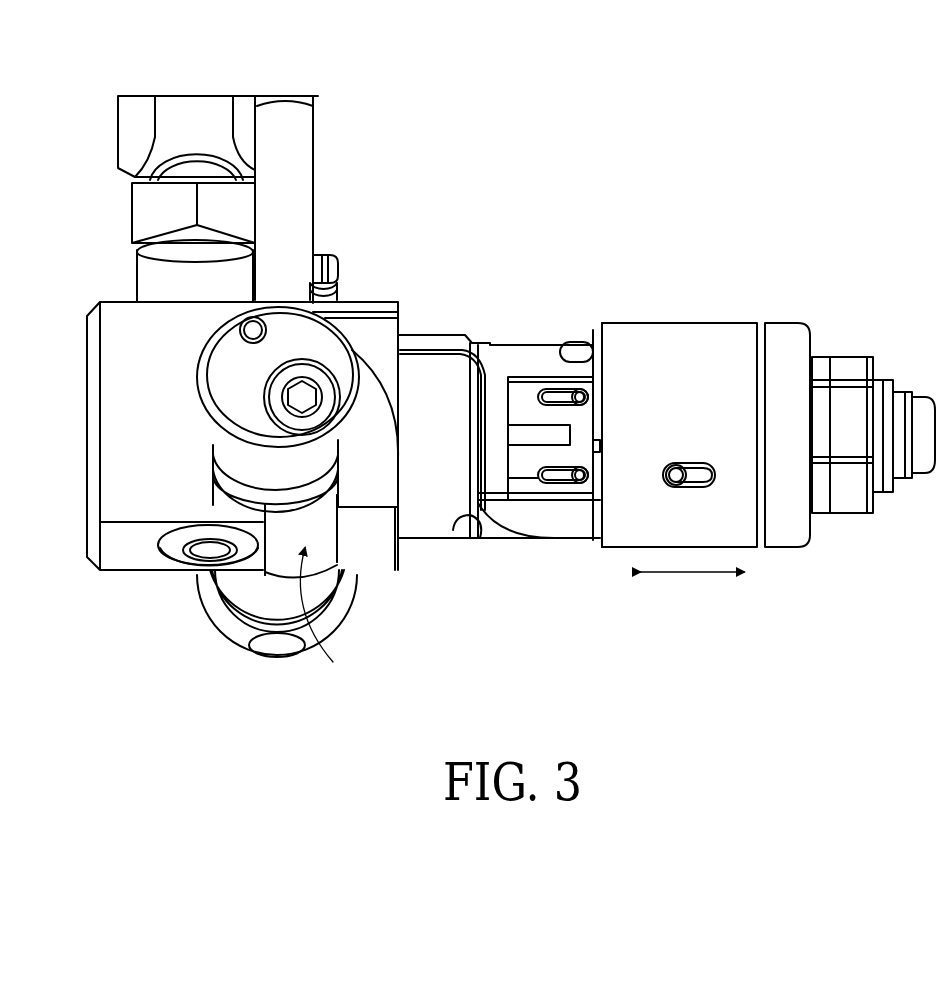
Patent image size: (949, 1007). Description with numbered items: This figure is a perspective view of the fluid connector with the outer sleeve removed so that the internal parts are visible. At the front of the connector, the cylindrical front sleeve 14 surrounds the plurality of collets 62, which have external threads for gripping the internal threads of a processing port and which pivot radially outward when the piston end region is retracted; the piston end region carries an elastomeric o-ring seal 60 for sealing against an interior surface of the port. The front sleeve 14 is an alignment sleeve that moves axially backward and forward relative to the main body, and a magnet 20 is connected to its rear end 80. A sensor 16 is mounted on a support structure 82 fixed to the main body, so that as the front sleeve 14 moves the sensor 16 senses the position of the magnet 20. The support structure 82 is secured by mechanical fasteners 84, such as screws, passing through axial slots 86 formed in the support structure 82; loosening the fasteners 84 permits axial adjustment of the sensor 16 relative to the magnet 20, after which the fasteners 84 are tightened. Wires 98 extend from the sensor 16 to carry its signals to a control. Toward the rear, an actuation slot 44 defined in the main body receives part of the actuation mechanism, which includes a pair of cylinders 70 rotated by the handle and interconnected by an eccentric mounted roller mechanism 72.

The front sleeve 14 is at (785, 537).
The sensor 16 is at (527, 447).
The magnet 20 is at (598, 365).
The actuation slot 44 is at (338, 550).
The seal 60 is at (903, 402).
The collets 62 is at (852, 363).
The cylinders 70 is at (215, 377).
The eccentric mounted roller mechanism 72 is at (332, 619).
The rear end of the front sleeve 80 is at (726, 358).
The support structure 82 is at (518, 403).
The mechanical fasteners 84 is at (577, 395).
The axial slots 86 is at (542, 393).
The wires 98 is at (437, 352).